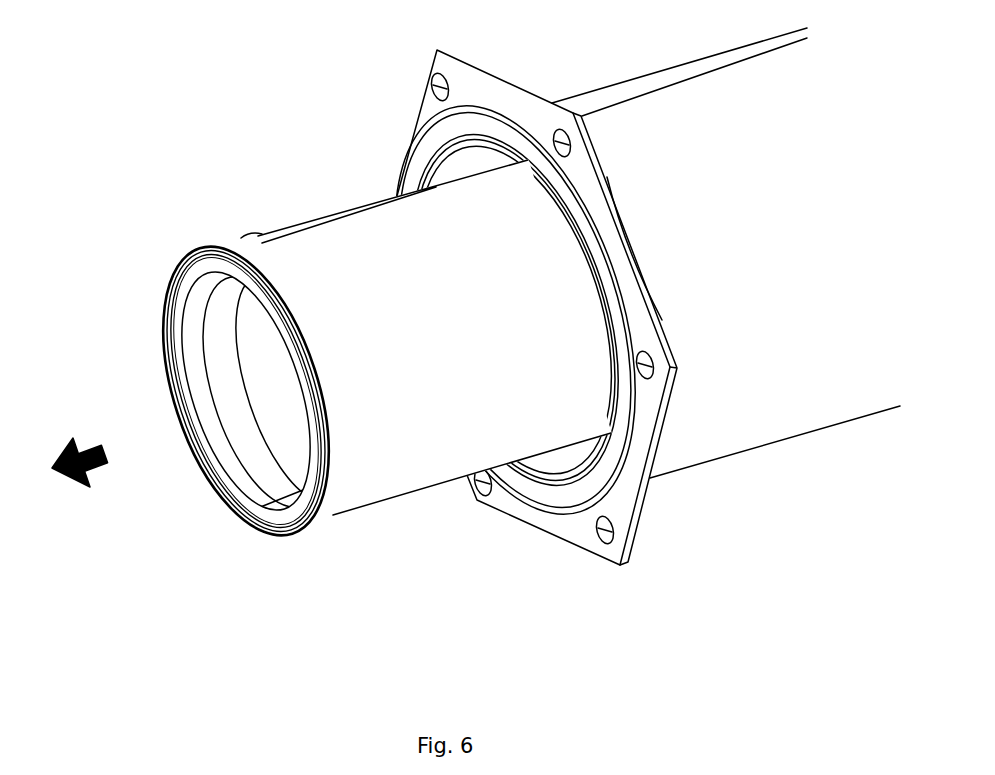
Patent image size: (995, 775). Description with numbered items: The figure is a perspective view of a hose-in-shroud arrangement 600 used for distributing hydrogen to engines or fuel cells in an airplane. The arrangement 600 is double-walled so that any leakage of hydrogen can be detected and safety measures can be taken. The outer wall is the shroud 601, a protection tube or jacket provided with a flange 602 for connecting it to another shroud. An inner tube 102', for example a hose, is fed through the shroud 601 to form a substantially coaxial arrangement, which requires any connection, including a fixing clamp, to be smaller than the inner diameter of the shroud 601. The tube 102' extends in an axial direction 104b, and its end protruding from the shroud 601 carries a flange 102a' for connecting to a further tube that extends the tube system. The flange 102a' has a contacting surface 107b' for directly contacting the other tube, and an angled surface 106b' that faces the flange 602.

The hose-in-shroud arrangement 600 is at (293, 83).
The flange 602 is at (630, 528).
The shroud 601 is at (710, 428).
The tube 102' is at (434, 374).
The flange 102a' is at (336, 425).
The angled surface 106b' is at (246, 360).
The contacting surface 107b' is at (257, 436).
The axial direction 104b is at (86, 432).